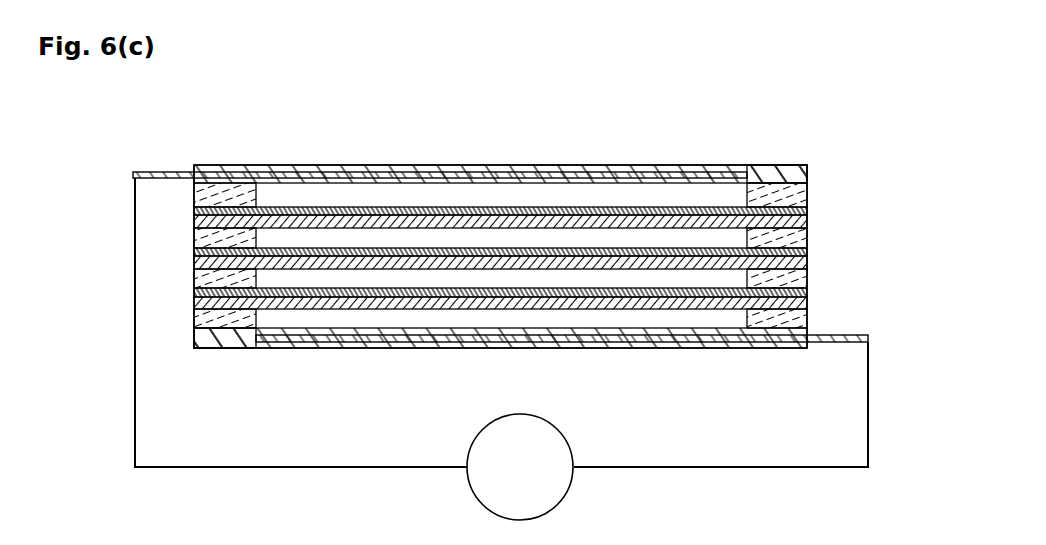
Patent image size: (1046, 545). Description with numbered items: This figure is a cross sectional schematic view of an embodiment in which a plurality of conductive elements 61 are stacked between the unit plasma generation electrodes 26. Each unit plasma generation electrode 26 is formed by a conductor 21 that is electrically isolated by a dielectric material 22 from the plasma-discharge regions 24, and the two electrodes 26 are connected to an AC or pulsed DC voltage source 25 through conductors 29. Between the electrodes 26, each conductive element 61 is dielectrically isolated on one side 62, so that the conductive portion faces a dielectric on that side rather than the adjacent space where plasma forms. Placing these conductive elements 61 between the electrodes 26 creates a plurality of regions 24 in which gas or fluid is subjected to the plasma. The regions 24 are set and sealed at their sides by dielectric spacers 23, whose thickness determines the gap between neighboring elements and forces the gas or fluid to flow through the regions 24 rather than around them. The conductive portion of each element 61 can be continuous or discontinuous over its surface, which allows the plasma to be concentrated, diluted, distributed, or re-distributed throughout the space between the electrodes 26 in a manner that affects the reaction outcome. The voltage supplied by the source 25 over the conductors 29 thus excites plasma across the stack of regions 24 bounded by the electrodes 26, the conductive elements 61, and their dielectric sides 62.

The conductor 21 is at (148, 170).
The dielectric material 22 is at (785, 172).
The dielectric spacer 23 is at (795, 196).
The plasma-discharge region 24 is at (283, 322).
The AC or pulsed DC voltage source 25 is at (562, 481).
The unit plasma generation electrode 26 is at (422, 165).
The conductor 29 is at (215, 469).
The conductive element 61 is at (808, 222).
The dielectric isolation side 62 is at (193, 291).